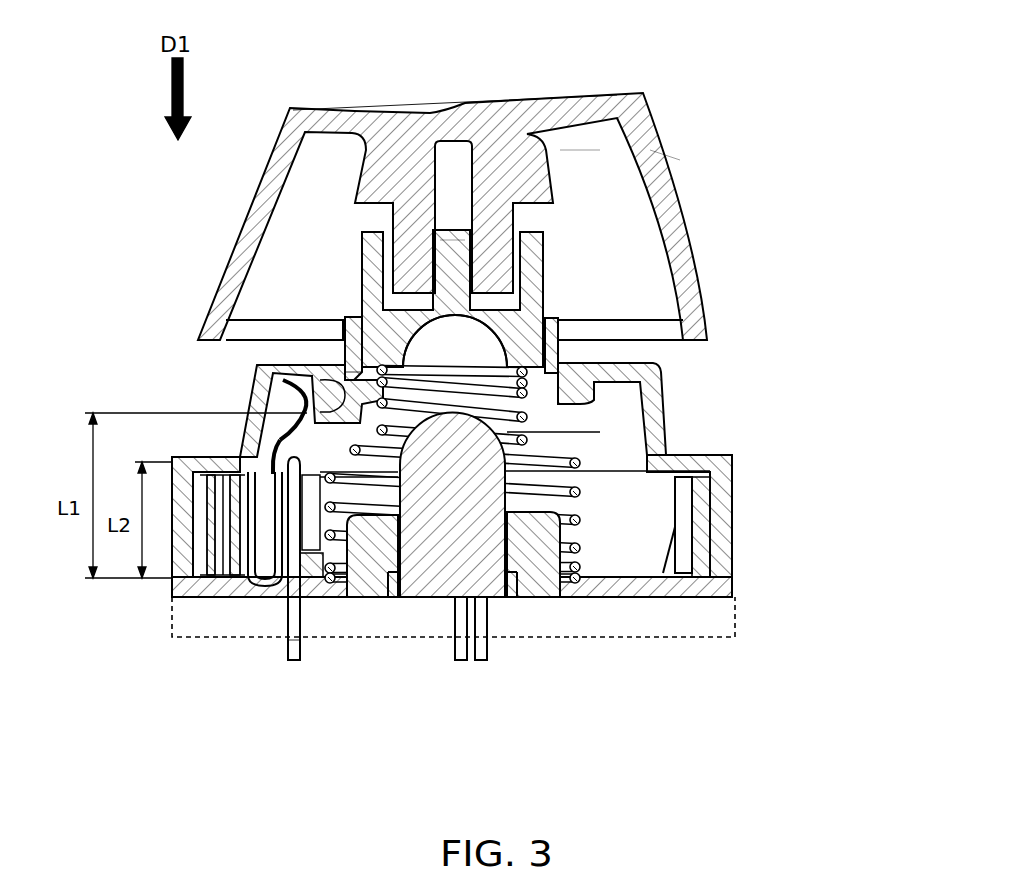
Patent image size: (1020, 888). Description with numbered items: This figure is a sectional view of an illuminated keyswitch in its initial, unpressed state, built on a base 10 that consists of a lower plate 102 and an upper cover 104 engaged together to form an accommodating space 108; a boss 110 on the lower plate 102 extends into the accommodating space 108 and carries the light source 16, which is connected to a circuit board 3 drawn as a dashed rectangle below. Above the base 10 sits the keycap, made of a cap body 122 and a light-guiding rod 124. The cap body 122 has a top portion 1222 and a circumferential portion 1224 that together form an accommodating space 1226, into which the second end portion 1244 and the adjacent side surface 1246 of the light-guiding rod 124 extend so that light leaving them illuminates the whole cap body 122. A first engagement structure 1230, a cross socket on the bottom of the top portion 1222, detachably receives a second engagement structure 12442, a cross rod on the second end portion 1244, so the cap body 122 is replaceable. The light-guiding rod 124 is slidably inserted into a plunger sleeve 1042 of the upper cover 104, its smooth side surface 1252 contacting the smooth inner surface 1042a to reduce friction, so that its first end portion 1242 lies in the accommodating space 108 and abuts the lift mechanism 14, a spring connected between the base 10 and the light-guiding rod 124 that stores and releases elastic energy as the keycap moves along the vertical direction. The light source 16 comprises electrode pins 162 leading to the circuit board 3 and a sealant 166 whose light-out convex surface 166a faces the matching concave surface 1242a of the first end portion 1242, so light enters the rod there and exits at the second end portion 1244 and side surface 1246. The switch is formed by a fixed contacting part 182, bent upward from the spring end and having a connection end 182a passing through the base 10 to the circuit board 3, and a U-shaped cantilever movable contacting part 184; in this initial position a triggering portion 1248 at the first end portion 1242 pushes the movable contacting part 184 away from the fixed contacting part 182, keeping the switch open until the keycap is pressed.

The base 10 is at (787, 425).
The circuit board 3 is at (640, 640).
The lift mechanism 14 is at (580, 548).
The light source 16 is at (452, 474).
The lower plate 102 is at (680, 600).
The upper cover 104 is at (653, 402).
The accommodating space 108 is at (653, 505).
The boss 110 is at (538, 585).
The cap body 122 is at (662, 80).
The top portion 1222 is at (557, 115).
The circumferential portion 1224 is at (665, 183).
The accommodating space 1226 is at (612, 167).
The first engagement structure 1230 is at (447, 163).
The light-guiding rod 124 is at (332, 270).
The first end portion 1242 is at (370, 362).
The concave surface 1242a is at (365, 360).
The second end portion 1244 is at (358, 232).
The side surface 1246 is at (545, 242).
The second engagement structure 12442 is at (453, 258).
The triggering portion 1248 is at (320, 398).
The smooth side surface 1252 is at (548, 350).
The plunger sleeve 1042 is at (545, 330).
The inner surface 1042a is at (473, 325).
The electrode pins 162 is at (462, 663).
The sealant 166 is at (422, 600).
The light-out convex surface 166a is at (530, 432).
The fixed contacting part 182 is at (297, 488).
The connection end 182a is at (294, 665).
The movable contacting part 184 is at (278, 450).